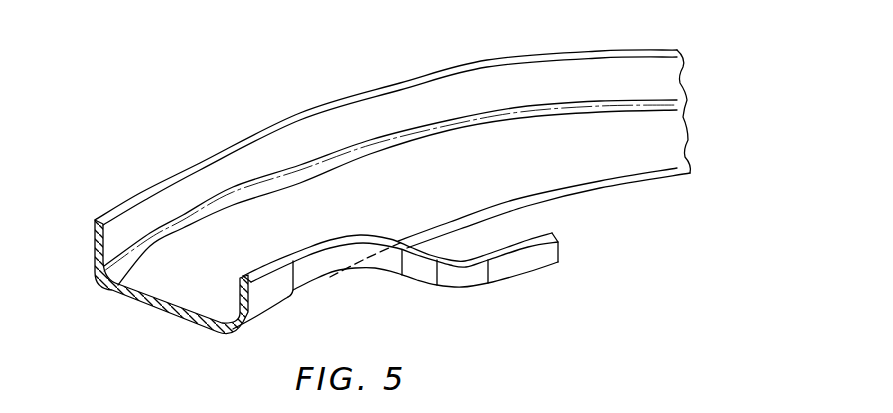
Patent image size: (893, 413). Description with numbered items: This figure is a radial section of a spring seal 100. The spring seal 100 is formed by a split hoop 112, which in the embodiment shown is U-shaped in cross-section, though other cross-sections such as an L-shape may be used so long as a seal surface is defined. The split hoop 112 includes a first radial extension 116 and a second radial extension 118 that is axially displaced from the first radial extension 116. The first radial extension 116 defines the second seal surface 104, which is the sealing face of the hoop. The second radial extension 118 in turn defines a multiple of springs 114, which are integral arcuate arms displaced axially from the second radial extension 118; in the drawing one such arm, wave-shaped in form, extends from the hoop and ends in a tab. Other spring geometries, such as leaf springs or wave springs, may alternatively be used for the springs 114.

The spring seal 100 is at (245, 89).
The second seal surface 104 is at (86, 244).
The split hoop 112 is at (492, 106).
The springs 114 is at (517, 266).
The first radial extension 116 is at (146, 194).
The second radial extension 118 is at (256, 275).